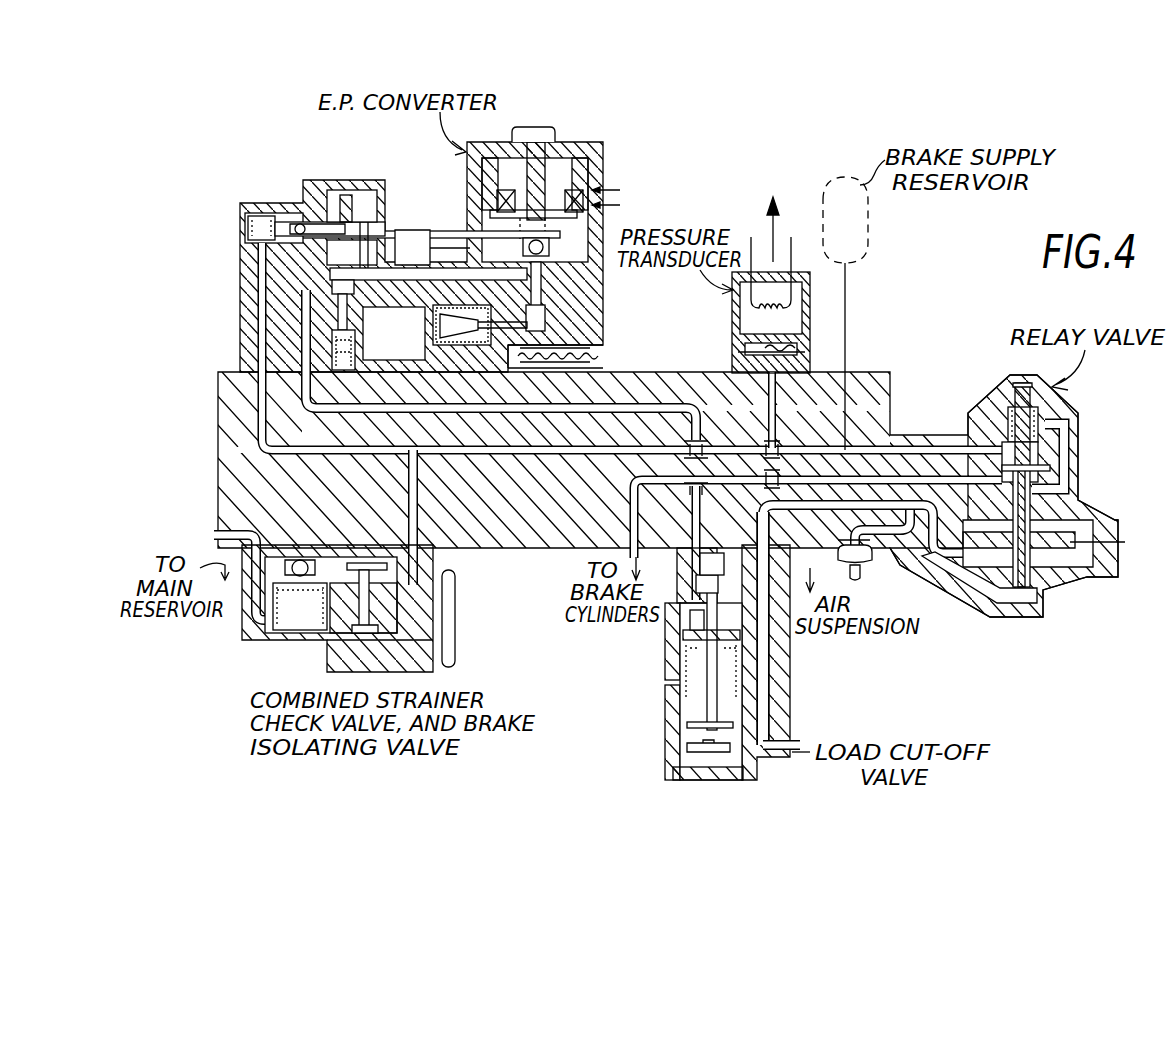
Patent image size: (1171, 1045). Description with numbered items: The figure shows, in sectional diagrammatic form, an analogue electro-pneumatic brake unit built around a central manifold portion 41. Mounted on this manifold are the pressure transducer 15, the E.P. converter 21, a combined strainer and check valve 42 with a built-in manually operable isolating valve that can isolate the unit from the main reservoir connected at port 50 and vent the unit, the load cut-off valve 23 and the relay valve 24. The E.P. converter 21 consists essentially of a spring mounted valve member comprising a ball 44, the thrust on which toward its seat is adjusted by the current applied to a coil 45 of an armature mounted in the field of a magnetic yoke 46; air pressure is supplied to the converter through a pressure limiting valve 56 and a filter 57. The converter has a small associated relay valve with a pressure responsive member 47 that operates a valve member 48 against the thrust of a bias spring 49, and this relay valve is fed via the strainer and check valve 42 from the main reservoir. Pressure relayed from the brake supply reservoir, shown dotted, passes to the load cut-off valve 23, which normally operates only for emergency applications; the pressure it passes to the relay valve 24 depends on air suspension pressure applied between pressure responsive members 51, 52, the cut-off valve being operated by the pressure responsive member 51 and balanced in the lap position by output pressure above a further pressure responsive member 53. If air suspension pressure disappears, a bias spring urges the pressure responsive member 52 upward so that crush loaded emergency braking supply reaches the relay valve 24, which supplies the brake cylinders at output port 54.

The pressure transducer 15 is at (748, 316).
The E.P. converter 21 is at (592, 305).
The load cut-off valve 23 is at (712, 654).
The relay valve 24 is at (1066, 412).
The central manifold portion 41 is at (888, 384).
The strainer and check valve 42 is at (305, 655).
The ball 44 is at (545, 246).
The coil 45 is at (583, 182).
The magnetic yoke 46 is at (585, 146).
The pressure responsive member 47 is at (361, 205).
The valve member 48 is at (293, 222).
The bias spring 49 is at (266, 208).
The port 50 is at (220, 530).
The pressure responsive member 51 is at (688, 714).
The pressure responsive member 52 is at (686, 746).
The pressure responsive member 53 is at (686, 628).
The output port 54 is at (700, 555).
The pressure limiting valve 56 is at (357, 310).
The filter 57 is at (455, 345).